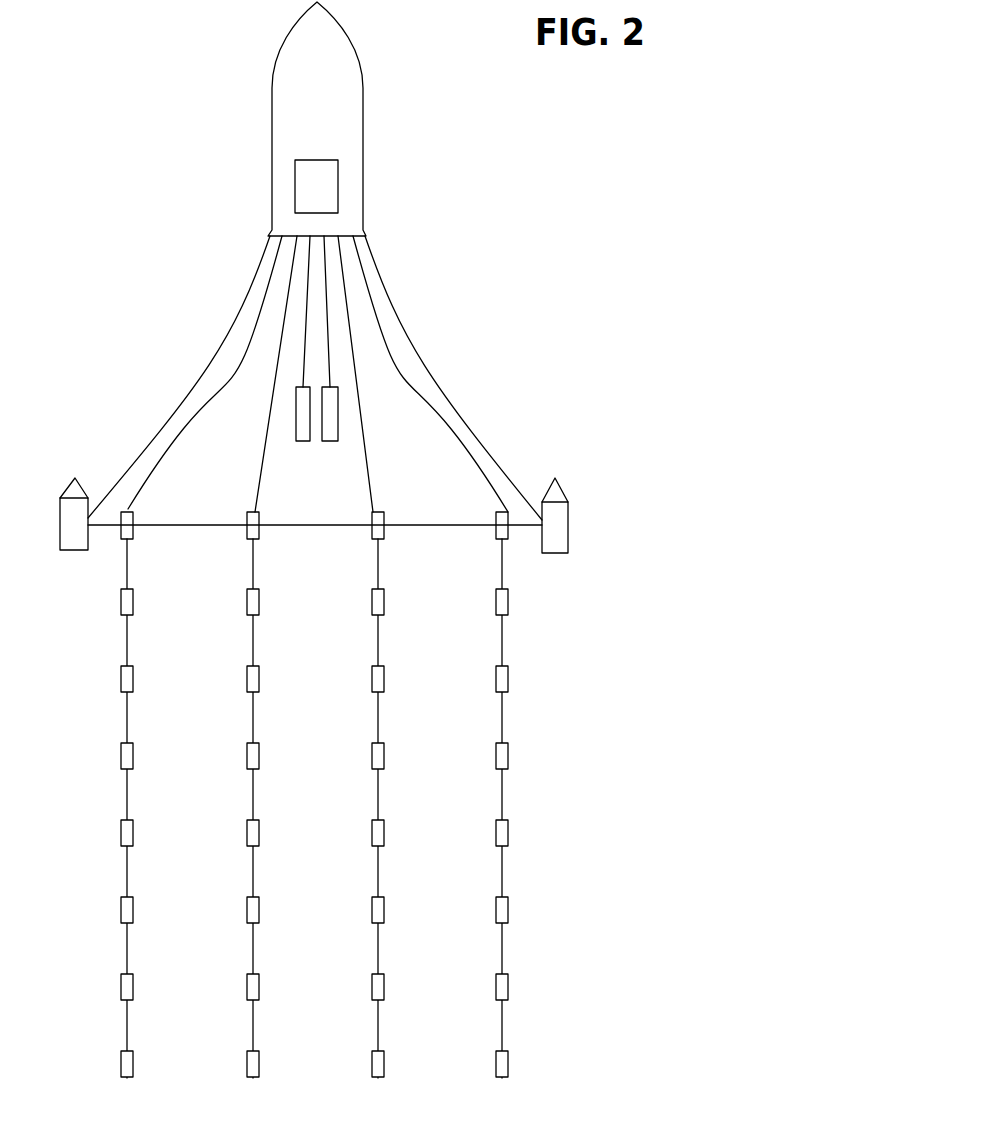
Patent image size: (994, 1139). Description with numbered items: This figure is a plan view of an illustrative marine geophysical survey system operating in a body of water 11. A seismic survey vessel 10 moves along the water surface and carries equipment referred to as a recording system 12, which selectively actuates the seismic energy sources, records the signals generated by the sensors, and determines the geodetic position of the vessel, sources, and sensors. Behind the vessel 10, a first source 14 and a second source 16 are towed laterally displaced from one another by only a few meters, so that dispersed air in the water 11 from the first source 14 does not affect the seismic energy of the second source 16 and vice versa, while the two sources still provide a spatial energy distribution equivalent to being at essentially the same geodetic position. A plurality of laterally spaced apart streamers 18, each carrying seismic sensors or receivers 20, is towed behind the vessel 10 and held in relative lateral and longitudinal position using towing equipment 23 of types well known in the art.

The seismic survey vessel 10 is at (364, 103).
The body of water 11 is at (697, 706).
The recording system 12 is at (318, 187).
The first seismic energy source 14 is at (303, 441).
The second seismic energy source 16 is at (330, 441).
The streamer 18 is at (127, 562).
The seismic sensor 20 is at (320, 847).
The towing equipment 23 is at (590, 553).